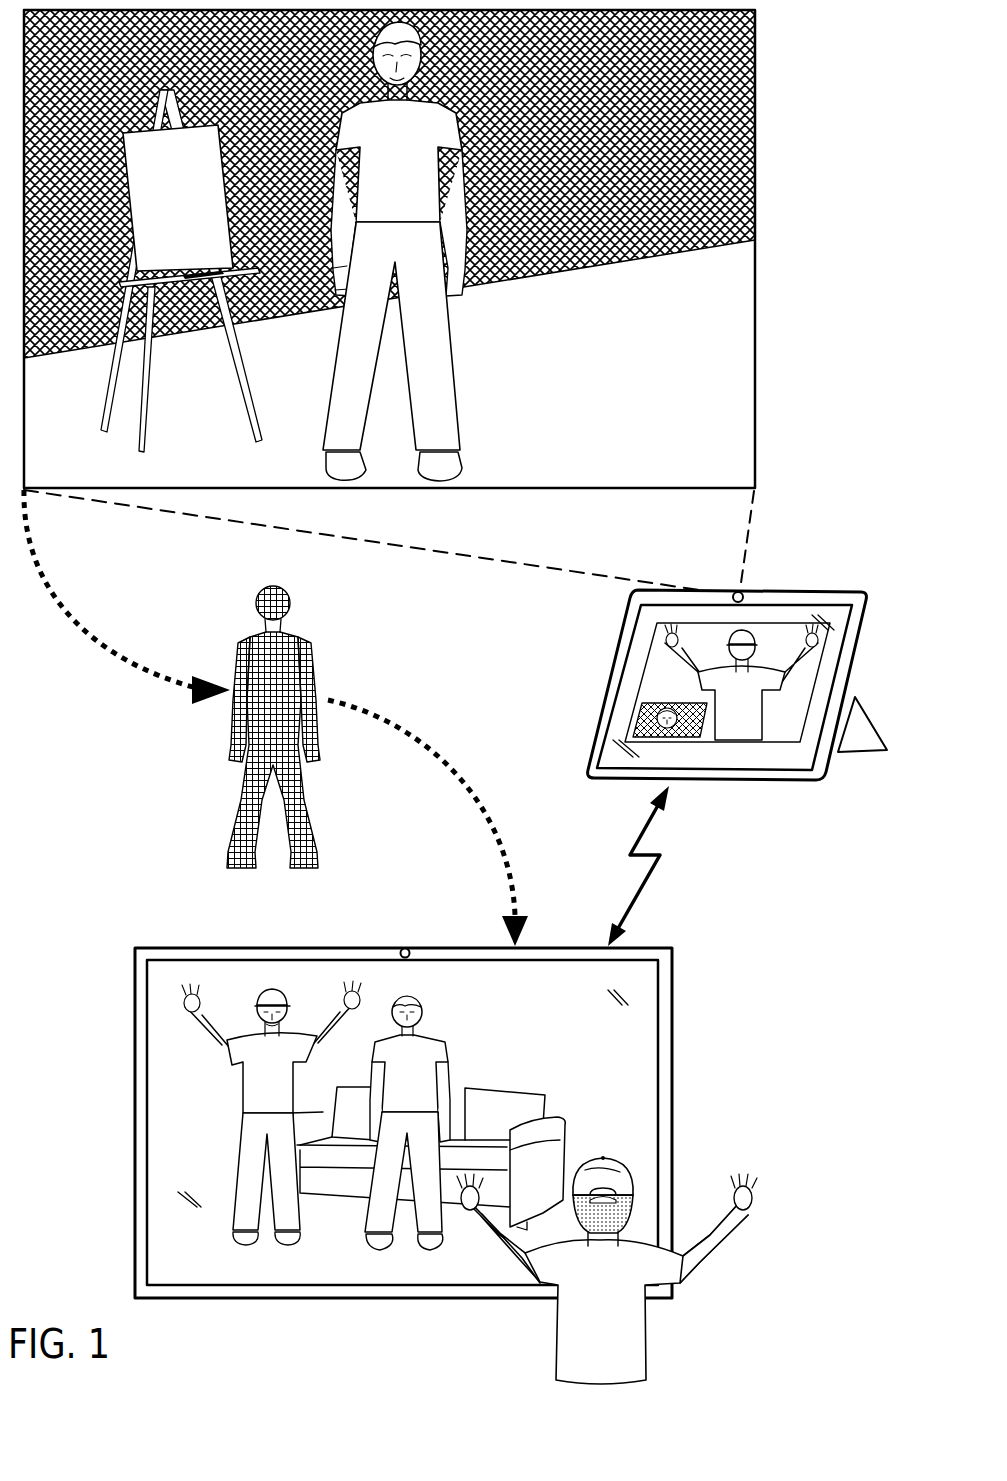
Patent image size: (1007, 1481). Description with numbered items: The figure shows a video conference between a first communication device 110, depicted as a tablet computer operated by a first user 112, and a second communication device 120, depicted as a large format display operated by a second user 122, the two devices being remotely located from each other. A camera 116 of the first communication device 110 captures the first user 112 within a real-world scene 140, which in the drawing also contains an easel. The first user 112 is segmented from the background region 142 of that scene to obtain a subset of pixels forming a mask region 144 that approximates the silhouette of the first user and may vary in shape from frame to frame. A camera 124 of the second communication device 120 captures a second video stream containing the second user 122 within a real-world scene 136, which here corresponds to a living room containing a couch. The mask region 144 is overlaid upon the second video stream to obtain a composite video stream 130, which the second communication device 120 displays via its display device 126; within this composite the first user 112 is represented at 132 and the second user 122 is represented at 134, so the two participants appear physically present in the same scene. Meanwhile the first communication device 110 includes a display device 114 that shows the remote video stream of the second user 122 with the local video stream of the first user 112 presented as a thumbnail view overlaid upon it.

The first communication device 110 is at (737, 657).
The first user 112 is at (443, 118).
The display device 114 is at (780, 616).
The camera 116 is at (738, 591).
The second communication device 120 is at (436, 1121).
The second user 122 is at (696, 1256).
The camera 124 is at (403, 948).
The display device 126 is at (329, 972).
The composite video stream 130 is at (373, 1161).
The representation of first user 132 is at (425, 1052).
The representation of second user 134 is at (246, 1038).
The real-world scene 136 is at (656, 1002).
The real-world scene 140 is at (556, 481).
The background region 142 is at (260, 352).
The mask region 144 is at (246, 657).